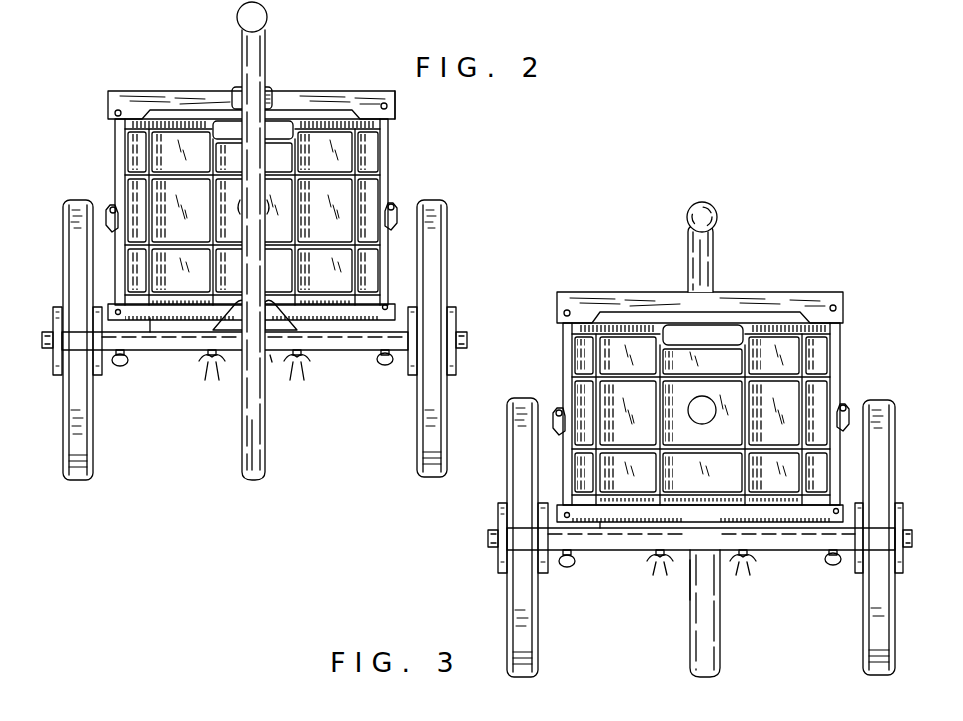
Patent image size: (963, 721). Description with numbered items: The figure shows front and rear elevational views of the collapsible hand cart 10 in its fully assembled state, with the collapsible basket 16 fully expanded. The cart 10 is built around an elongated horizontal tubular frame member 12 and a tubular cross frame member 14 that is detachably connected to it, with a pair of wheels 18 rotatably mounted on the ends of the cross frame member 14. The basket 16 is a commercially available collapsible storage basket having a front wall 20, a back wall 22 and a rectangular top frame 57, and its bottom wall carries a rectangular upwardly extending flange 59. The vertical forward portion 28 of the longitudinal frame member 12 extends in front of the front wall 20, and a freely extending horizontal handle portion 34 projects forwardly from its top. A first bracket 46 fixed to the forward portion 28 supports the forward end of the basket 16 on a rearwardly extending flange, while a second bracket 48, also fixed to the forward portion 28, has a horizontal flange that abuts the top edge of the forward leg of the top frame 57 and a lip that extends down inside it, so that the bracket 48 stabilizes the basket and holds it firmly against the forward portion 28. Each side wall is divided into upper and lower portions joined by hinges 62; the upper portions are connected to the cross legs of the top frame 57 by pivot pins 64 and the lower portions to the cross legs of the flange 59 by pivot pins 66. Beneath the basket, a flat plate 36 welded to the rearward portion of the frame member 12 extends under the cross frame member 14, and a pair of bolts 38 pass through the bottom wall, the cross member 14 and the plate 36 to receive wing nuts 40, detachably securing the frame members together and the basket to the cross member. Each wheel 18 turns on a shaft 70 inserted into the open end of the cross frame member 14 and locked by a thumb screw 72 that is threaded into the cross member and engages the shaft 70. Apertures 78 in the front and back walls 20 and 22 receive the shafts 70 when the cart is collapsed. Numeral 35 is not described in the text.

In FIG. 2, the collapsible cart 10 is at (346, 50).
In FIG. 3, the collapsible cart 10 is at (794, 232).
In FIG. 2, the elongated horizontal tubular frame member 12 is at (240, 430).
In FIG. 3, the elongated horizontal tubular frame member 12 is at (687, 252).
In FIG. 2, the tubular cross frame member 14 is at (167, 352).
In FIG. 3, the tubular cross frame member 14 is at (810, 540).
In FIG. 2, the collapsible basket 16 is at (395, 117).
In FIG. 2, the wheels 18 is at (85, 478).
In FIG. 3, the wheels 18 is at (876, 622).
In FIG. 2, the front wall 20 is at (368, 148).
In FIG. 3, the back wall 22 is at (820, 345).
In FIG. 2, the vertical forward portion 28 is at (267, 63).
In FIG. 3, the vertical forward portion 28 is at (714, 272).
In FIG. 2, the horizontal handle portion 34 is at (237, 17).
In FIG. 3, the horizontal handle portion 34 is at (718, 215).
In FIG. 3, the lower handle section 35 is at (659, 592).
In FIG. 2, the flat plate 36 is at (272, 356).
In FIG. 3, the flat plate 36 is at (686, 556).
In FIG. 2, the bolts 38 is at (207, 364).
In FIG. 3, the bolts 38 is at (741, 564).
In FIG. 2, the wing nuts 40 is at (215, 362).
In FIG. 3, the wing nuts 40 is at (655, 562).
In FIG. 2, the first bracket 46 is at (283, 318).
In FIG. 2, the second bracket 48 is at (276, 93).
In FIG. 2, the rectangular top frame 57 is at (153, 103).
In FIG. 3, the rectangular top frame 57 is at (778, 297).
In FIG. 2, the rectangular upwardly extending flange 59 is at (152, 318).
In FIG. 3, the rectangular upwardly extending flange 59 is at (600, 516).
In FIG. 2, the hinges 62 is at (110, 207).
In FIG. 3, the hinges 62 is at (557, 409).
In FIG. 2, the pivot pins 64 is at (116, 112).
In FIG. 3, the pivot pins 64 is at (568, 310).
In FIG. 2, the pivot pins 66 is at (118, 311).
In FIG. 3, the pivot pins 66 is at (566, 514).
In FIG. 2, the shaft 70 is at (47, 330).
In FIG. 3, the shaft 70 is at (488, 543).
In FIG. 2, the thumb screw 72 is at (120, 366).
In FIG. 3, the thumb screw 72 is at (567, 567).
In FIG. 2, the apertures 78 is at (272, 207).
In FIG. 3, the apertures 78 is at (694, 398).